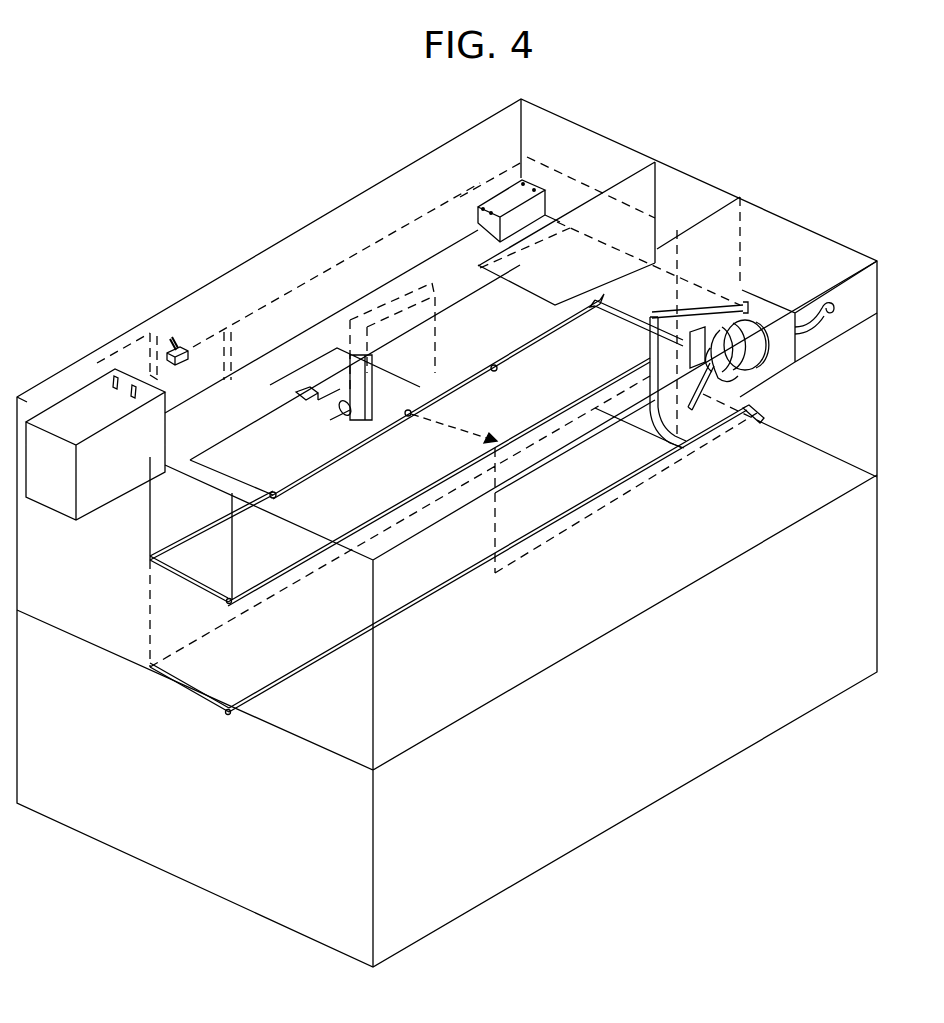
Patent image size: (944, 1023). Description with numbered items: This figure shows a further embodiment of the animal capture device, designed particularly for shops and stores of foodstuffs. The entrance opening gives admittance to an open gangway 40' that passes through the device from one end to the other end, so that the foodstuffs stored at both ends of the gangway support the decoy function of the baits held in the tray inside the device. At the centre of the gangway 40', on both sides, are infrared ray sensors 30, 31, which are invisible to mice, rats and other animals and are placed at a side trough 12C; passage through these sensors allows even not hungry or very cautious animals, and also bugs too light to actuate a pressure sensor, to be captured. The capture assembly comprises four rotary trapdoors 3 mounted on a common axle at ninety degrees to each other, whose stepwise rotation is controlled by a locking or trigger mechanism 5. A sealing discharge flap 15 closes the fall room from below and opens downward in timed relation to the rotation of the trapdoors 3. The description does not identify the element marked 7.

The rotary trapdoors 3 is at (222, 572).
The locking or trigger mechanism 5 is at (276, 496).
The roller 7 is at (320, 416).
The trough 12C is at (365, 372).
The sealing discharge flap 15 is at (285, 651).
The infrared ray sensor 30 is at (497, 442).
The infrared ray sensor 31 is at (409, 416).
The open gangway 40' is at (377, 412).